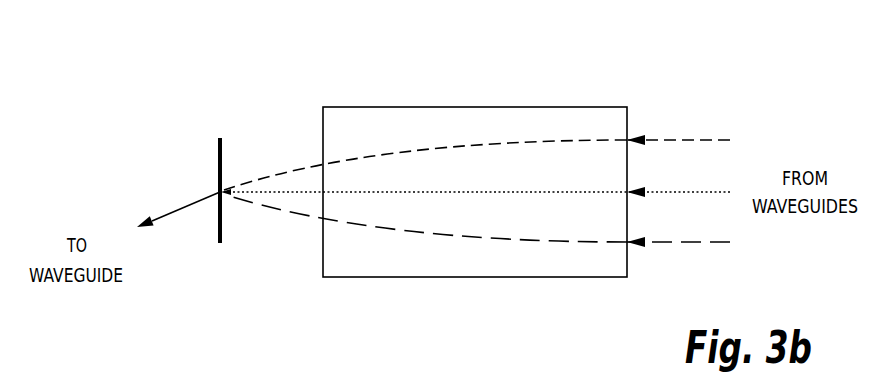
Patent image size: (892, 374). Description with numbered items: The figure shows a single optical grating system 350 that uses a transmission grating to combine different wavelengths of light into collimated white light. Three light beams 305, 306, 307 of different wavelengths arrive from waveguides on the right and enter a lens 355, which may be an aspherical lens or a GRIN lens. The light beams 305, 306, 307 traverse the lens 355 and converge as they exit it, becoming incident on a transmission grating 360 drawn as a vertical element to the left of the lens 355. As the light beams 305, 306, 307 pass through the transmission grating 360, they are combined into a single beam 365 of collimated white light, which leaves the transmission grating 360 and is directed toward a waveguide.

The single optical grating system 350 is at (706, 37).
The lens 355 is at (577, 107).
The transmission grating 360 is at (218, 159).
The single beam 365 is at (195, 202).
The light beam 305 is at (658, 141).
The light beam 306 is at (658, 191).
The light beam 307 is at (658, 241).